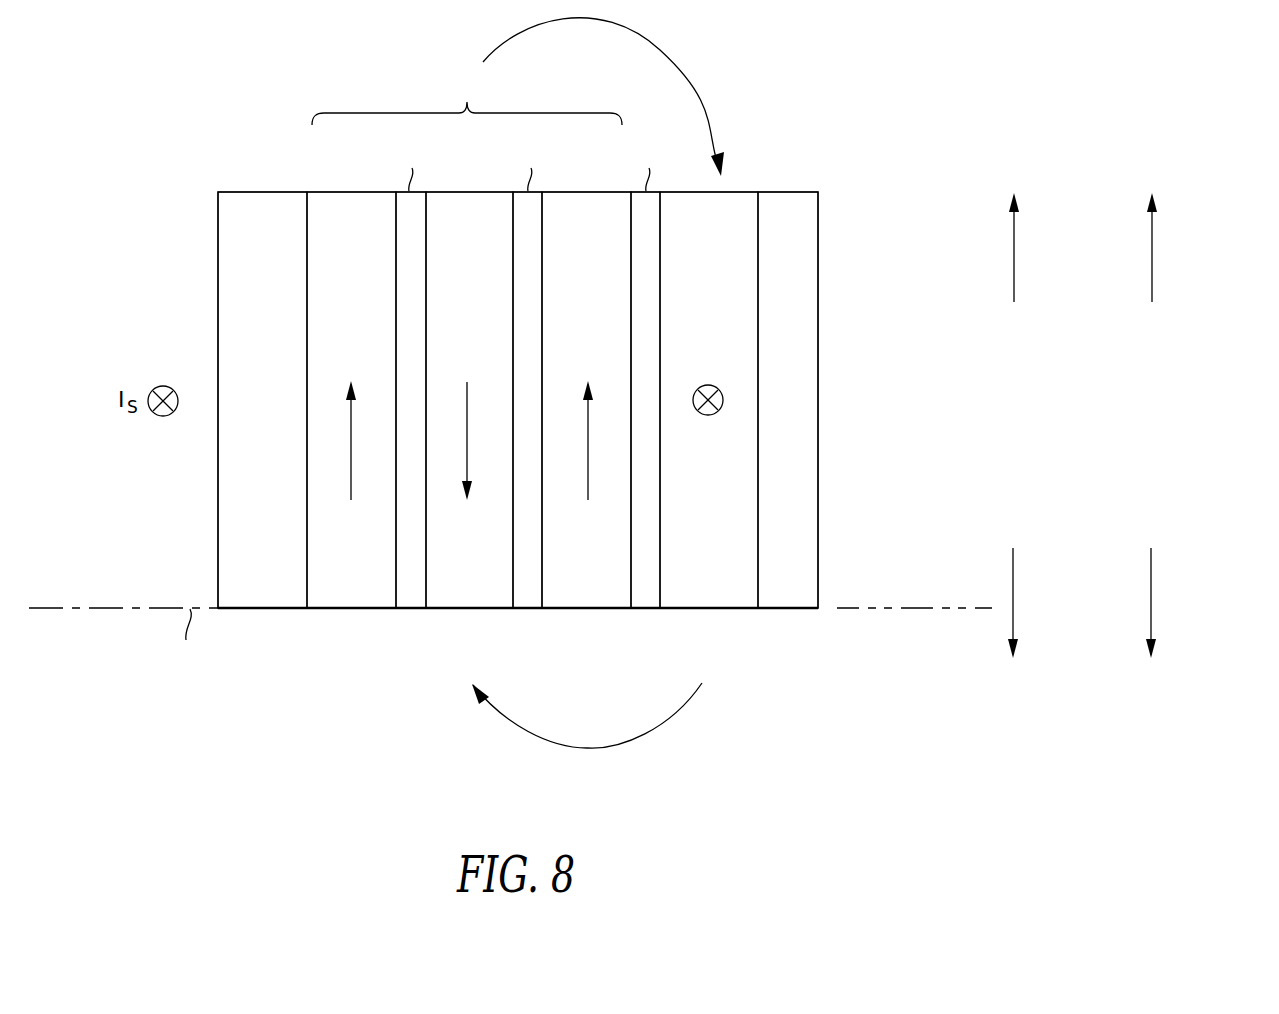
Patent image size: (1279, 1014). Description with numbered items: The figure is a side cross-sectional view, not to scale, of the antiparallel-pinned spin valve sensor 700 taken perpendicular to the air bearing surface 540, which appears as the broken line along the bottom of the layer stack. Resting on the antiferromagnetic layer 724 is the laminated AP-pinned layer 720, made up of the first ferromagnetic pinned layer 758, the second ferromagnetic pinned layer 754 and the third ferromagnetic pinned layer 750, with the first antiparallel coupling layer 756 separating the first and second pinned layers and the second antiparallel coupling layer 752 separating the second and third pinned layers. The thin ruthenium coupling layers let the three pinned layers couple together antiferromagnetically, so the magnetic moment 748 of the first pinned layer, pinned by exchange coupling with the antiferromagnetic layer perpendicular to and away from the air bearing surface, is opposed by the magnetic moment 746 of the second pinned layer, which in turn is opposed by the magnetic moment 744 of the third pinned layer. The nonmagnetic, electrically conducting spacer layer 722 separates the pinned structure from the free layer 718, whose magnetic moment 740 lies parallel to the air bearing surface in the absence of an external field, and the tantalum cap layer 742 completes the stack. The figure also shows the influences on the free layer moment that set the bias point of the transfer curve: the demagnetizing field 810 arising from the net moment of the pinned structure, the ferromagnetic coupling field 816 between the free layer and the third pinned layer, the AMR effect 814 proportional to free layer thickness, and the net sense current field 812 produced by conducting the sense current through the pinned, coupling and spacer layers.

The spin valve sensor 700 is at (735, 727).
The air bearing surface 540 is at (108, 607).
The antiferromagnetic layer 724 is at (266, 609).
The first ferromagnetic pinned layer 758 is at (339, 609).
The first antiparallel coupling layer 756 is at (408, 609).
The second ferromagnetic pinned layer 754 is at (473, 609).
The second antiparallel coupling layer 752 is at (528, 609).
The third ferromagnetic pinned layer 750 is at (581, 609).
The spacer layer 722 is at (649, 609).
The free layer 718 is at (714, 609).
The cap layer 742 is at (798, 609).
The AP-pinned layer 720 is at (467, 97).
The magnetic moment of FM1 layer 748 is at (351, 460).
The magnetic moment of FM2 layer 746 is at (467, 416).
The magnetic moment of FM3 layer 744 is at (588, 460).
The magnetic moment of free layer 740 is at (710, 416).
The demagnetizing field 810 is at (683, 72).
The sense current field 812 is at (1151, 598).
The AMR effect 814 is at (1152, 232).
The ferromagnetic coupling field 816 is at (1014, 232).